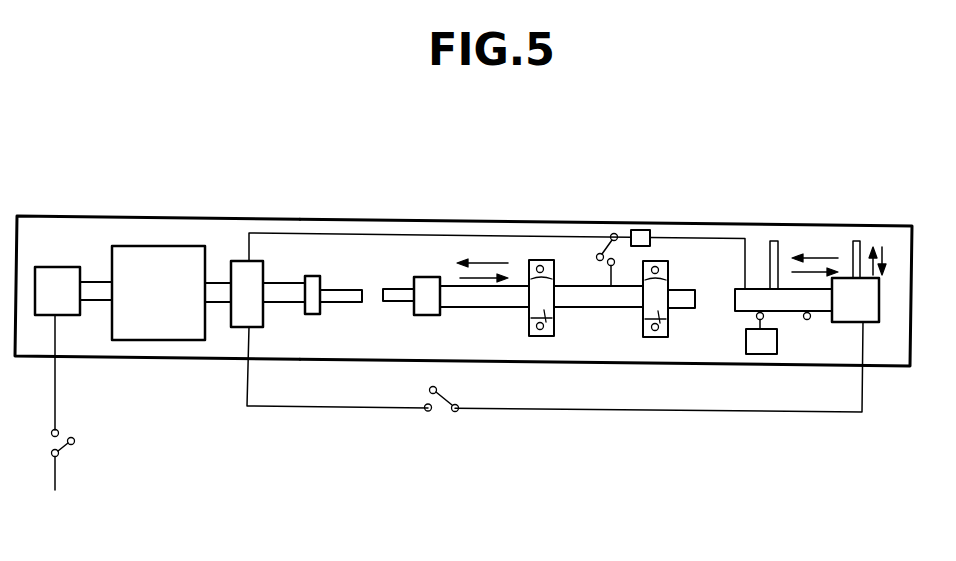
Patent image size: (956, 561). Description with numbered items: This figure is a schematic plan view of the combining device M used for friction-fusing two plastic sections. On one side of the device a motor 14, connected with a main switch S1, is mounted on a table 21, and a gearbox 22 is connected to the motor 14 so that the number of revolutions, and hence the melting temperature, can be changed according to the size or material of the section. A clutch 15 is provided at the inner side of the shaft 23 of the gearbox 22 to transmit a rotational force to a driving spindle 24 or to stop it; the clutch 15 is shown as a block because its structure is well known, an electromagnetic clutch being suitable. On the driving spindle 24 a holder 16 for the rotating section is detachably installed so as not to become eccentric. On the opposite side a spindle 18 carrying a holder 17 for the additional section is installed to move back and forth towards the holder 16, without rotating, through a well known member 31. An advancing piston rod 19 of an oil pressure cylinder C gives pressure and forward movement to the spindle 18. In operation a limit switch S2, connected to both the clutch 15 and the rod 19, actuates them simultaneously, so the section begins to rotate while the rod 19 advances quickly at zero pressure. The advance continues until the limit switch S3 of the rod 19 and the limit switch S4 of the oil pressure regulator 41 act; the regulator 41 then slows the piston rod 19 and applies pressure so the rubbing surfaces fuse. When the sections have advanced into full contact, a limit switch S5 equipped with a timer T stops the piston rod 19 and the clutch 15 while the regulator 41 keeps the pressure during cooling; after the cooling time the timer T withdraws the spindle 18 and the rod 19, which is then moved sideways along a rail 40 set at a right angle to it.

The motor 14 is at (55, 277).
The clutch 15 is at (245, 275).
The holder 16 is at (343, 297).
The holder 17 is at (401, 294).
The spindle 18 is at (486, 296).
The advancing piston rod 19 is at (765, 298).
The table 21 is at (57, 243).
The gearbox 22 is at (163, 320).
The shaft 23 is at (222, 293).
The driving spindle 24 is at (290, 295).
The member 31 is at (545, 315).
The rail 40 is at (858, 262).
The oil pressure regulator 41 is at (758, 343).
The oil pressure cylinder C is at (863, 295).
The combining device M is at (553, 221).
The timer T is at (645, 238).
The main switch S1 is at (72, 458).
The limit switch S2 is at (438, 412).
The limit switch S3 is at (808, 320).
The limit switch S4 is at (761, 320).
The limit switch S5 is at (613, 250).